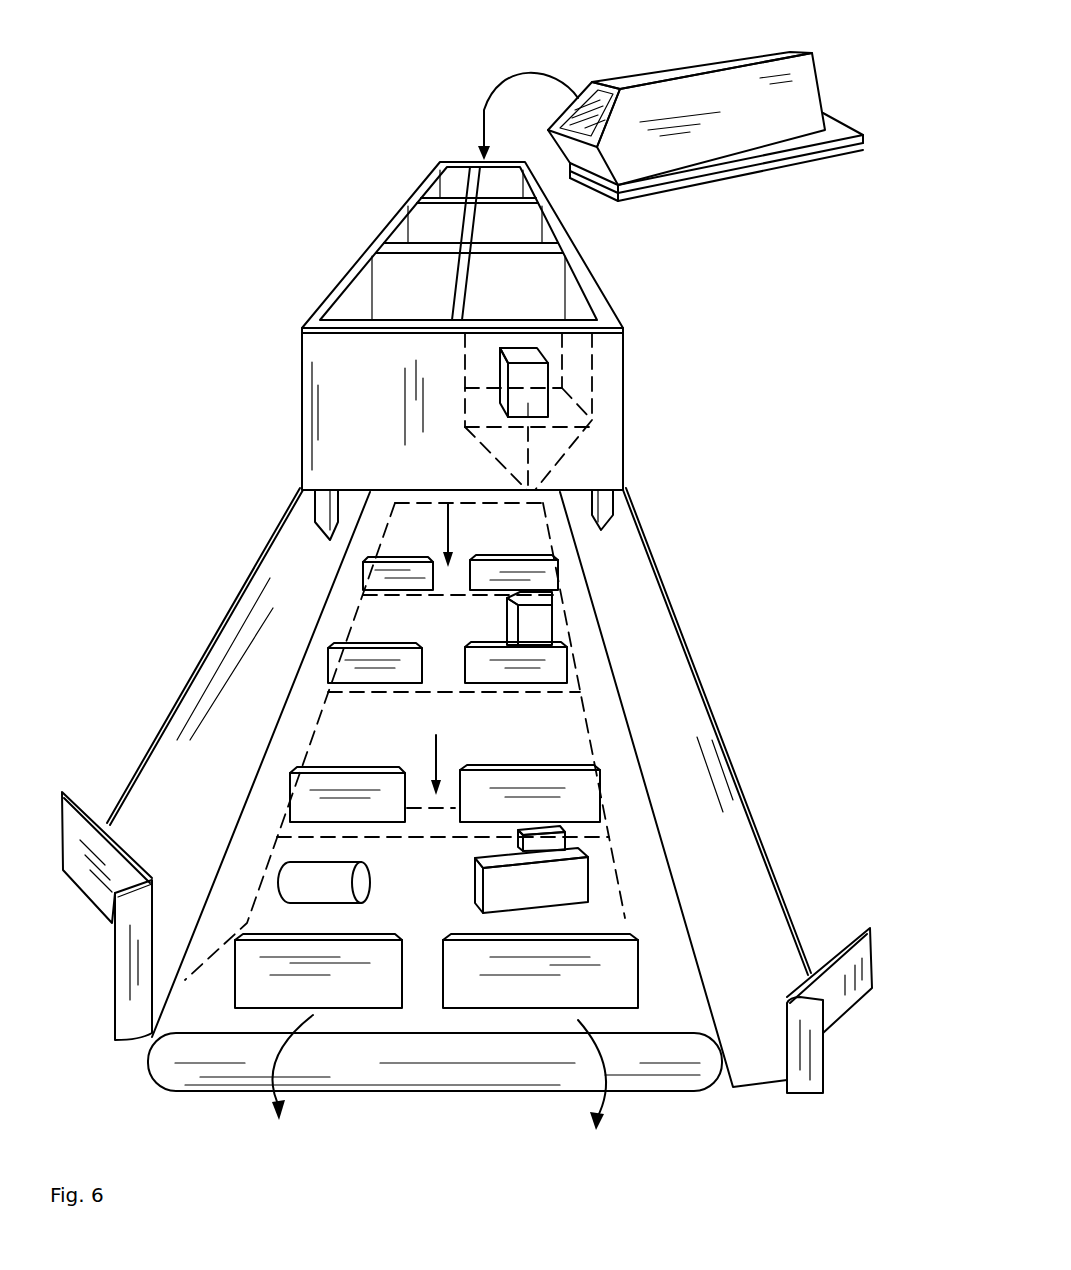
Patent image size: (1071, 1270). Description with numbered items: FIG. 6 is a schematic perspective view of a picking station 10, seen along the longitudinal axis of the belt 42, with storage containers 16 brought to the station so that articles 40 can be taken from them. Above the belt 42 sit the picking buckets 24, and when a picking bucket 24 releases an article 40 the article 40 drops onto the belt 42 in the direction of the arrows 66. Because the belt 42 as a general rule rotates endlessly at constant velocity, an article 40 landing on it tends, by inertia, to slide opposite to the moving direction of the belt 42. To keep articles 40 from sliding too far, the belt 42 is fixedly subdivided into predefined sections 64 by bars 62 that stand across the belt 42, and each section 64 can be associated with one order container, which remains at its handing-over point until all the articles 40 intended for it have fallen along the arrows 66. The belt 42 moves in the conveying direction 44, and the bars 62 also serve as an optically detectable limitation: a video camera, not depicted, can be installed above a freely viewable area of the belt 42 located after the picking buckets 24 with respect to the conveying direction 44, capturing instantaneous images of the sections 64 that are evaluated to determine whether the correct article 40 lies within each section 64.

The picking station 10 is at (272, 203).
The storage container 16 is at (820, 78).
The picking bucket 24 is at (612, 250).
The article 40 is at (506, 362).
The belt 42 is at (598, 672).
The conveying direction 44 is at (450, 523).
The bar 62 is at (290, 803).
The section 64 is at (562, 626).
The arrow 66 is at (283, 1058).